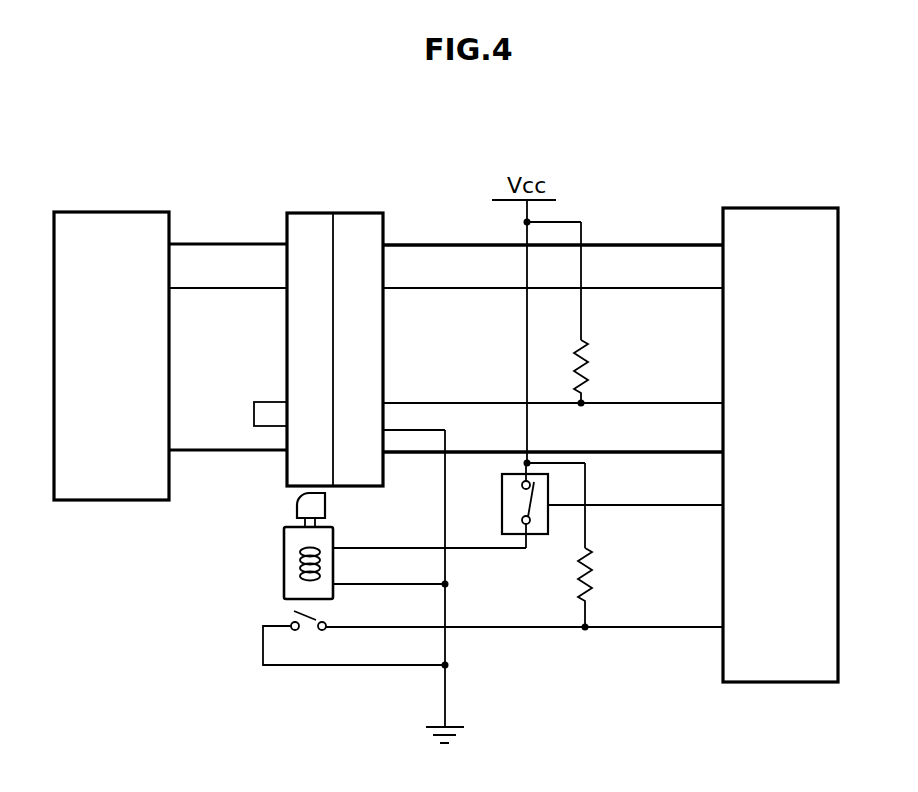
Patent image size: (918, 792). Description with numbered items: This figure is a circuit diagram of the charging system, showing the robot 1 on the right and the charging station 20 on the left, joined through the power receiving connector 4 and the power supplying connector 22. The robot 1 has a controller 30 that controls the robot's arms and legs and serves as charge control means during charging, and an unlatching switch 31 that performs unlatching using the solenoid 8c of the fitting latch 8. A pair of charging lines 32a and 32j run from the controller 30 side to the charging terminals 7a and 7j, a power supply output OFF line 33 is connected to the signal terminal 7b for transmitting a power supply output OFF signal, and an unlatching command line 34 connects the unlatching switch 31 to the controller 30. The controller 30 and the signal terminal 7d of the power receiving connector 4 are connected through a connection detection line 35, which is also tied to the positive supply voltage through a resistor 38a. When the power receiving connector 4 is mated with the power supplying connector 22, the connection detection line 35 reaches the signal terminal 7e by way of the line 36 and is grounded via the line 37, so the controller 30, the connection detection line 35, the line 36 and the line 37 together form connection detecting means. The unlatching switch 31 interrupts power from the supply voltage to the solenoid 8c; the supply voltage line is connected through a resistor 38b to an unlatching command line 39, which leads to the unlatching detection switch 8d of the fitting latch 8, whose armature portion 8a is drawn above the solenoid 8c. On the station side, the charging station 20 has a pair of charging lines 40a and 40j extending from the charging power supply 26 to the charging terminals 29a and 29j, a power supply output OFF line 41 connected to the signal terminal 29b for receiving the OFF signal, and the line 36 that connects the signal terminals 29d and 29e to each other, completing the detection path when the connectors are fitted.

The robot 1 is at (690, 145).
The charging station 20 is at (158, 130).
The charging power supply 26 is at (116, 212).
The power supplying connector 22 is at (313, 213).
The power receiving connector 4 is at (357, 213).
The controller 30 is at (762, 208).
The charging line 40a is at (208, 244).
The power supply output OFF line 41 is at (193, 290).
The charging line 40j is at (193, 449).
The charging terminal 29a is at (285, 243).
The signal terminal 29b is at (285, 290).
The signal terminal 29d is at (287, 397).
The signal terminal 29e is at (287, 428).
The charging terminal 29j is at (287, 456).
The line 36 is at (254, 413).
The charging terminal 7a is at (386, 242).
The signal terminal 7b is at (384, 290).
The signal terminal 7d is at (384, 402).
The signal terminal 7e is at (384, 428).
The charging terminal 7j is at (384, 456).
The charging line 32a is at (633, 244).
The power supply output OFF line 33 is at (623, 288).
The connection detection line 35 is at (638, 403).
The charging line 32j is at (620, 452).
The unlatching command line 34 is at (620, 505).
The unlatching command line 39 is at (633, 628).
The line 37 is at (446, 478).
The resistor 38a is at (588, 348).
The resistor 38b is at (592, 577).
The unlatching switch 31 is at (533, 540).
The fitting latch 8 is at (252, 560).
The relay armature 8a is at (297, 503).
The solenoid 8c is at (302, 570).
The unlatching detection switch 8d is at (313, 637).